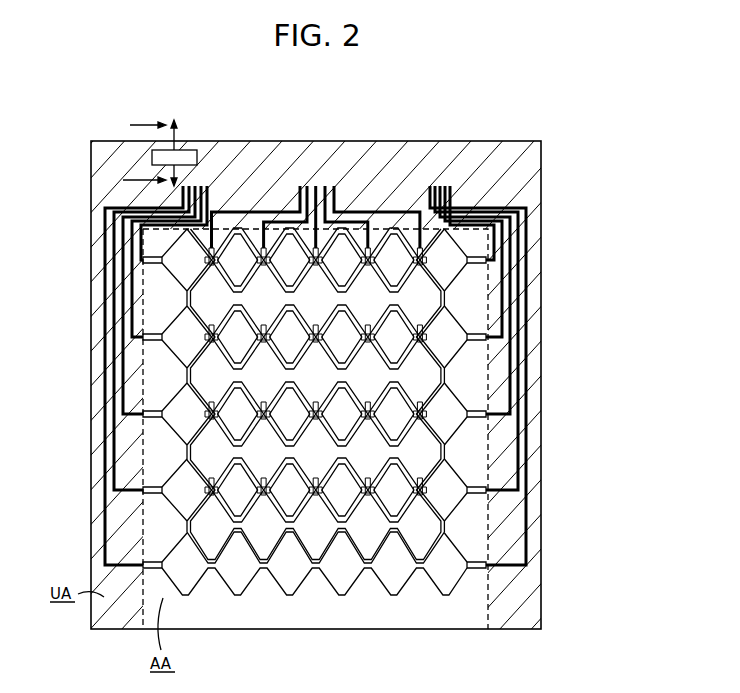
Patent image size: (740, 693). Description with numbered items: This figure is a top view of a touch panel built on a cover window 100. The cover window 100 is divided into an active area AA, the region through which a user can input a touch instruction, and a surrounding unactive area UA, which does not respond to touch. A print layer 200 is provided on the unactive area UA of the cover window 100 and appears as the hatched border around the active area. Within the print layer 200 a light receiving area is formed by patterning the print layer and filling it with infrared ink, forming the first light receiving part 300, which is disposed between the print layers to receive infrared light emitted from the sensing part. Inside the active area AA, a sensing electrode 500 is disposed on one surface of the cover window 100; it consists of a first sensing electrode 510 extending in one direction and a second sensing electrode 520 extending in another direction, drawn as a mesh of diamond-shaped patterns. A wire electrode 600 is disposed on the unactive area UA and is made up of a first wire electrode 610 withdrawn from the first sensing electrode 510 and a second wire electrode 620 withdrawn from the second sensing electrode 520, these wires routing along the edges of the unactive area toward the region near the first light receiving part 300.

The cover window 100 is at (542, 594).
The print layer 200 is at (538, 628).
The first light receiving part 300 is at (190, 149).
The sensing electrode 500 is at (386, 411).
The first sensing electrode 510 is at (455, 424).
The second sensing electrode 520 is at (433, 549).
The wire electrode 600 is at (264, 375).
The first wire electrode 610 is at (104, 414).
The second wire electrode 620 is at (227, 195).